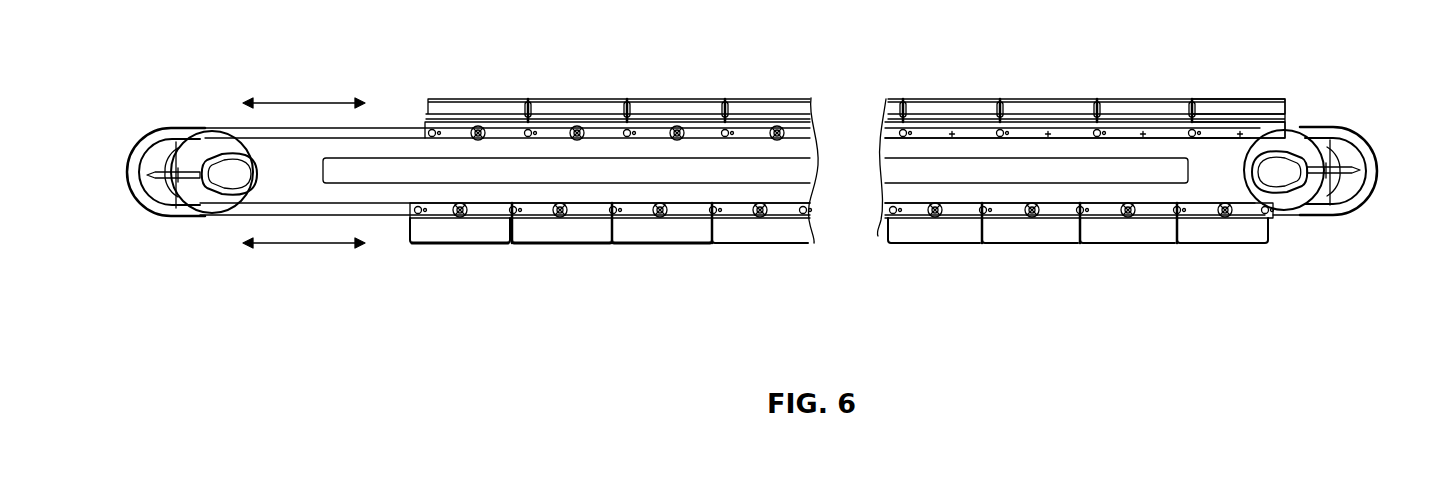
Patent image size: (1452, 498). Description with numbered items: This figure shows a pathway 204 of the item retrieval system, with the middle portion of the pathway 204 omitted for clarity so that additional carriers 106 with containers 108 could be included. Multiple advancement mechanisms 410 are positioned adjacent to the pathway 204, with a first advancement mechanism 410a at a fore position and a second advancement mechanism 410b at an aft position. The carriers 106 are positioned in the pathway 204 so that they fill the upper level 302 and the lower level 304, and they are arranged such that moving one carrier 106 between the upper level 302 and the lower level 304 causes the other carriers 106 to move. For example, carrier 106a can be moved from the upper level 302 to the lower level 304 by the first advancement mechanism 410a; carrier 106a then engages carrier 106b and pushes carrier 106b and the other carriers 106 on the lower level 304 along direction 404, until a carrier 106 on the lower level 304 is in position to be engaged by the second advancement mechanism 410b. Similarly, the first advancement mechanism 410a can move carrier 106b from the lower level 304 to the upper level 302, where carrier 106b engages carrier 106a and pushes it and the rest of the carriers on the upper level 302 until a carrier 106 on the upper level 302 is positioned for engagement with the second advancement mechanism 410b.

The pathway 204 is at (154, 112).
The direction 404 is at (243, 103).
The second advancement mechanism 410b is at (205, 215).
The carriers 106 is at (962, 133).
The carrier 106a is at (1227, 135).
The carrier 106b is at (1202, 207).
The containers 108 is at (1287, 99).
The upper level 302 is at (1312, 115).
The first advancement mechanism 410a is at (1327, 160).
The advancement mechanisms 410 is at (1294, 211).
The lower level 304 is at (1318, 226).